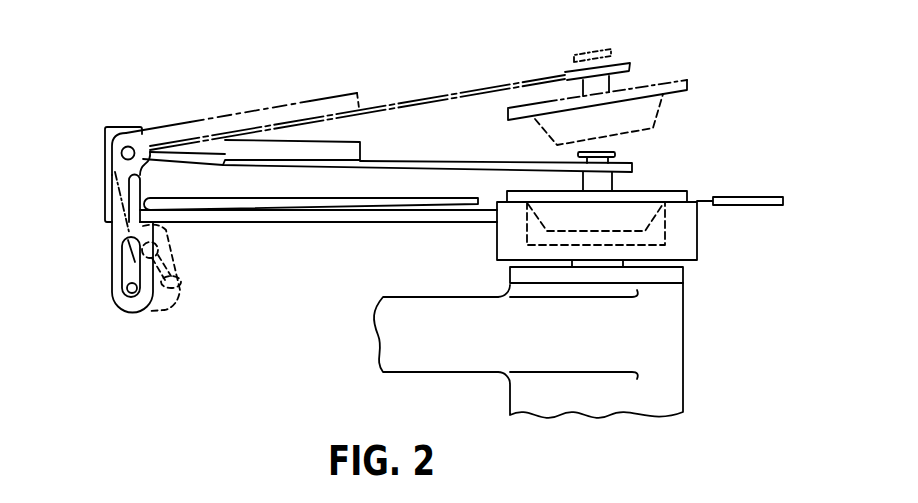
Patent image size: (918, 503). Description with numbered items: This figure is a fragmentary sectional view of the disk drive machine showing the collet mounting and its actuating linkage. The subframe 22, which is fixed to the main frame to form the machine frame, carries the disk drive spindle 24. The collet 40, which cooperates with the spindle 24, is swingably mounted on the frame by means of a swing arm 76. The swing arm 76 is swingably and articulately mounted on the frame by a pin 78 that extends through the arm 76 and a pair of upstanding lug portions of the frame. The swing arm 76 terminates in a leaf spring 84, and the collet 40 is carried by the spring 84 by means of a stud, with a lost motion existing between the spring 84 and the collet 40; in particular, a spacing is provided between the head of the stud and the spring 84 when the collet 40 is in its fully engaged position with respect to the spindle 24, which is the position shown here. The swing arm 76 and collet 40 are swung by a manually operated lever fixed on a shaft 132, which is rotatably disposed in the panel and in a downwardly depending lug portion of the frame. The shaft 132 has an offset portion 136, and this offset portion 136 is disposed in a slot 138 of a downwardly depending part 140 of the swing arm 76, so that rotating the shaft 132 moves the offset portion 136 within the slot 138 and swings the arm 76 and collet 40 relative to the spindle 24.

The subframe 22 is at (683, 340).
The disk drive spindle 24 is at (698, 236).
The collet 40 is at (668, 82).
The swing arm 76 is at (230, 114).
The pin 78 is at (121, 153).
The leaf spring 84 is at (468, 162).
The shaft 132 is at (182, 287).
The offset portion 136 is at (130, 293).
The slot 138 is at (125, 270).
The downwardly depending part 140 is at (107, 243).